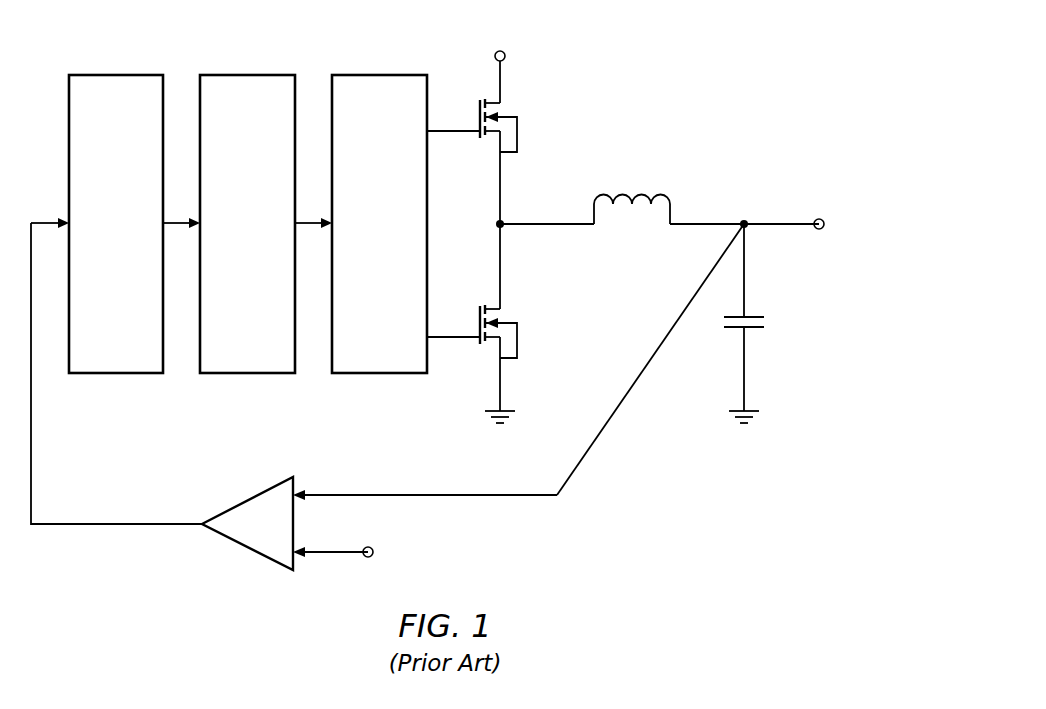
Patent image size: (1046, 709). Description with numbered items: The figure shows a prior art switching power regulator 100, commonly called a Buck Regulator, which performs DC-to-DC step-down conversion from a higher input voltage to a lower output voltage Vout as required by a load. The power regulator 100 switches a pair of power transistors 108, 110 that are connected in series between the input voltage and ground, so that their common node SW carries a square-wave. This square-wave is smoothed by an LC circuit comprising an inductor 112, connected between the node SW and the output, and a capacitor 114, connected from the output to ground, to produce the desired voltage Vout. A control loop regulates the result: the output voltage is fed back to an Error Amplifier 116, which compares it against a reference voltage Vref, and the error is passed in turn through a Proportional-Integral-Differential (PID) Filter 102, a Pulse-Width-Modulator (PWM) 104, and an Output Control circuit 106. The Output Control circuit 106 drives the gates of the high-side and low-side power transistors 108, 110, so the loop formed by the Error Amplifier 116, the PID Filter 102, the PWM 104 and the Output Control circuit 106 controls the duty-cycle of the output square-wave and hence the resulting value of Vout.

The power regulator 100 is at (700, 57).
The Proportional-Integral-Differential (PID) Filter 102 is at (116, 224).
The Pulse-Width-Modulator (PWM) 104 is at (247, 224).
The Output Control circuit 106 is at (379, 224).
The power transistor 108 is at (509, 117).
The power transistor 110 is at (509, 323).
The inductor 112 is at (643, 195).
The capacitor 114 is at (752, 330).
The Error Amplifier 116 is at (249, 498).